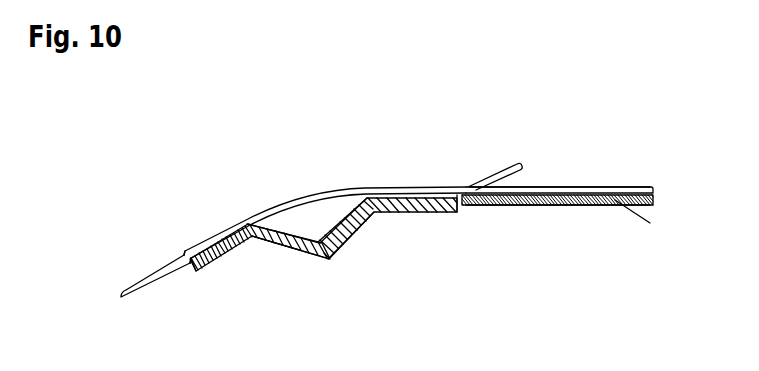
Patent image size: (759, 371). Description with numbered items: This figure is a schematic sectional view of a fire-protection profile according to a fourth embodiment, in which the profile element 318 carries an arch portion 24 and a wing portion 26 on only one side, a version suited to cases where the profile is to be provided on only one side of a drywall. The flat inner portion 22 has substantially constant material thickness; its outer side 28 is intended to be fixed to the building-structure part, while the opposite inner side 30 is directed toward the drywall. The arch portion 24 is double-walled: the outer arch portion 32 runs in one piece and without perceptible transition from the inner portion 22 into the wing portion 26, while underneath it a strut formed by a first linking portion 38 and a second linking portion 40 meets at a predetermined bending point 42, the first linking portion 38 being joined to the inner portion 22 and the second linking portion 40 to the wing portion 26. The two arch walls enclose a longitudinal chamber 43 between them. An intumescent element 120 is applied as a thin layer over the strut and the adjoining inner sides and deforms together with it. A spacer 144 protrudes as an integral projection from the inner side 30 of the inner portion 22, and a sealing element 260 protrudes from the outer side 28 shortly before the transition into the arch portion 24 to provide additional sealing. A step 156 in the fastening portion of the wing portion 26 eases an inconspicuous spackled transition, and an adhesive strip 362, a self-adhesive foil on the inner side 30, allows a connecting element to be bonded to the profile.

The profile element 318 is at (238, 121).
The arch portion 24 is at (259, 197).
The outer arch portion 32 is at (331, 197).
The chamber 43 is at (313, 222).
The inner portion 22 is at (602, 190).
The outer side 28 is at (553, 183).
The inner side 30 is at (558, 208).
The adhesive strip 362 is at (597, 203).
The sealing element 260 is at (499, 168).
The spacer 144 is at (456, 208).
The first linking portion 38 is at (364, 240).
The second linking portion 40 is at (312, 258).
The predetermined bending point 42 is at (333, 253).
The intumescent element 120 is at (280, 250).
The step 156 is at (182, 257).
The wing portion 26 is at (165, 268).